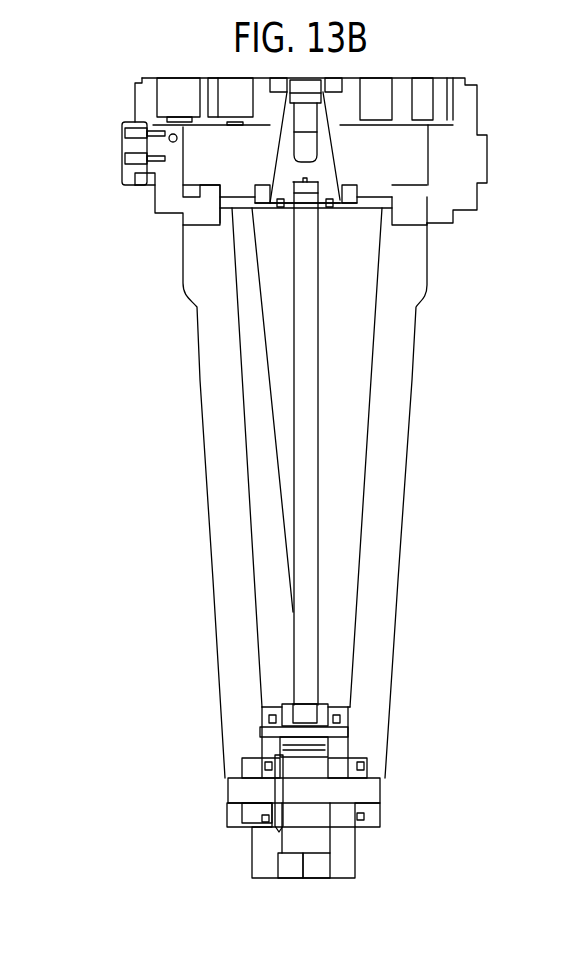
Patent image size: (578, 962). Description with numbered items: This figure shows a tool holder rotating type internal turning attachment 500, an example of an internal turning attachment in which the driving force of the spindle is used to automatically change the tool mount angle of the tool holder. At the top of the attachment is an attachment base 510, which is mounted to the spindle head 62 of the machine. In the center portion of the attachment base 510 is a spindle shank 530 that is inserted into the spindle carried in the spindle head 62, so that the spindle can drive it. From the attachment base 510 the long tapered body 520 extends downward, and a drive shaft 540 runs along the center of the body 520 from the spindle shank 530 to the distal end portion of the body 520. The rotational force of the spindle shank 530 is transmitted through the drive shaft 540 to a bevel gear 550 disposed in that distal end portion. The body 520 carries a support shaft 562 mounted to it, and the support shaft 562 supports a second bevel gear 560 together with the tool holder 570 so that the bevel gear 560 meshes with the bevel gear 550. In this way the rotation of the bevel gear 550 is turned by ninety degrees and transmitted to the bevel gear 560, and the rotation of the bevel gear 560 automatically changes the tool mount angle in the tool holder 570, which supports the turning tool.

The spindle head 62 is at (142, 103).
The tool holder rotating type internal turning attachment 500 is at (486, 401).
The attachment base 510 is at (465, 127).
The body 520 is at (400, 358).
The spindle shank 530 is at (320, 170).
The drive shaft 540 is at (308, 468).
The bevel gear 550 is at (315, 757).
The bevel gear 560 is at (278, 823).
The support shaft 562 is at (365, 792).
The tool holder 570 is at (343, 845).